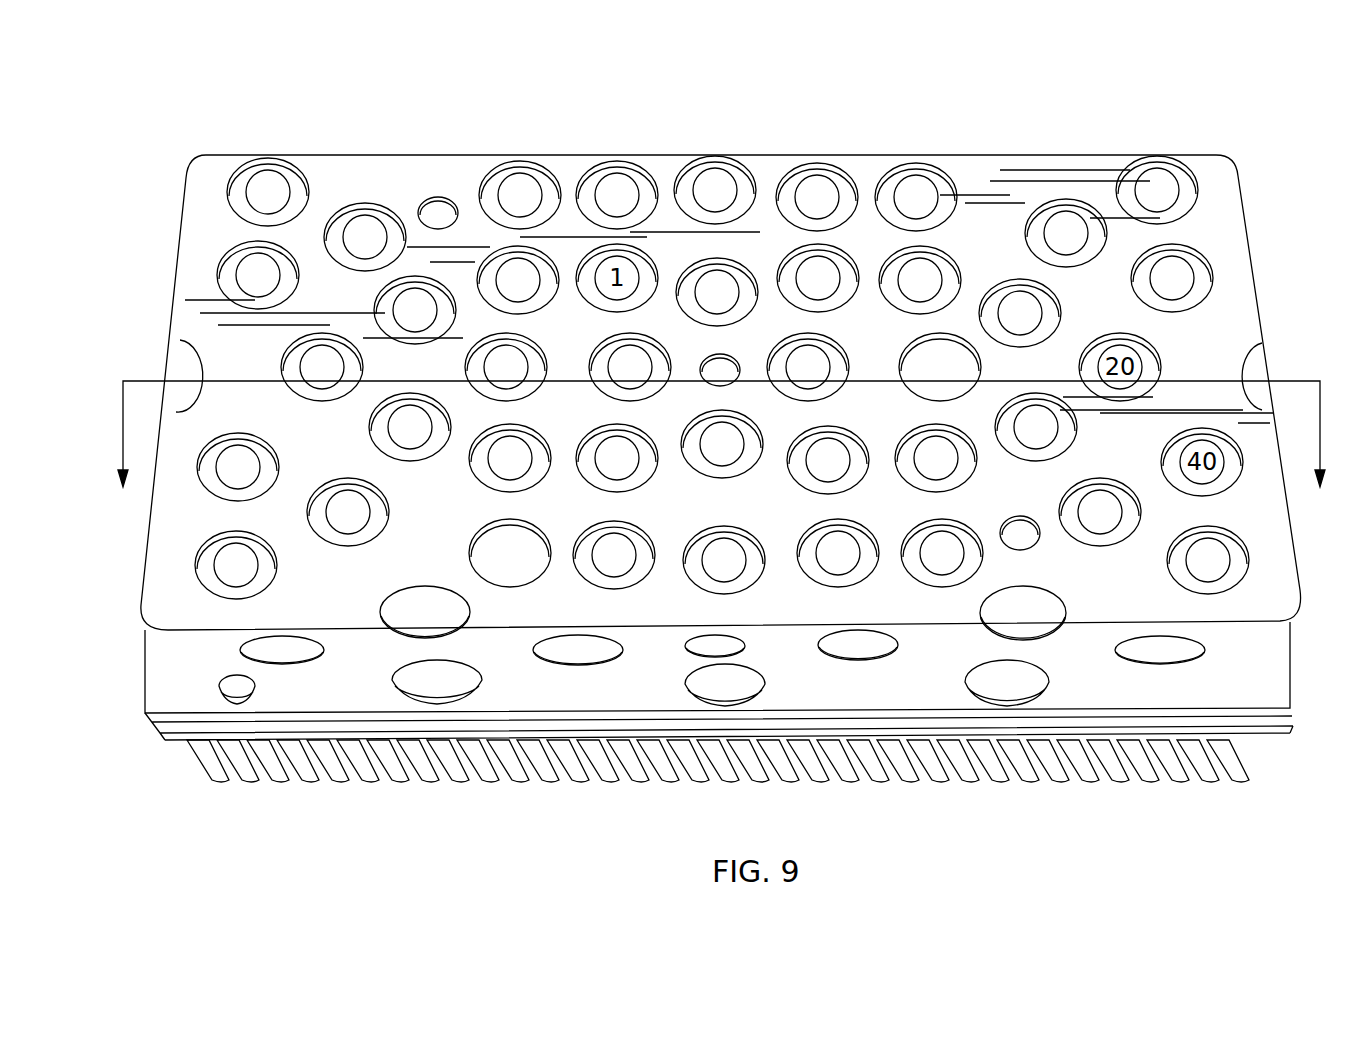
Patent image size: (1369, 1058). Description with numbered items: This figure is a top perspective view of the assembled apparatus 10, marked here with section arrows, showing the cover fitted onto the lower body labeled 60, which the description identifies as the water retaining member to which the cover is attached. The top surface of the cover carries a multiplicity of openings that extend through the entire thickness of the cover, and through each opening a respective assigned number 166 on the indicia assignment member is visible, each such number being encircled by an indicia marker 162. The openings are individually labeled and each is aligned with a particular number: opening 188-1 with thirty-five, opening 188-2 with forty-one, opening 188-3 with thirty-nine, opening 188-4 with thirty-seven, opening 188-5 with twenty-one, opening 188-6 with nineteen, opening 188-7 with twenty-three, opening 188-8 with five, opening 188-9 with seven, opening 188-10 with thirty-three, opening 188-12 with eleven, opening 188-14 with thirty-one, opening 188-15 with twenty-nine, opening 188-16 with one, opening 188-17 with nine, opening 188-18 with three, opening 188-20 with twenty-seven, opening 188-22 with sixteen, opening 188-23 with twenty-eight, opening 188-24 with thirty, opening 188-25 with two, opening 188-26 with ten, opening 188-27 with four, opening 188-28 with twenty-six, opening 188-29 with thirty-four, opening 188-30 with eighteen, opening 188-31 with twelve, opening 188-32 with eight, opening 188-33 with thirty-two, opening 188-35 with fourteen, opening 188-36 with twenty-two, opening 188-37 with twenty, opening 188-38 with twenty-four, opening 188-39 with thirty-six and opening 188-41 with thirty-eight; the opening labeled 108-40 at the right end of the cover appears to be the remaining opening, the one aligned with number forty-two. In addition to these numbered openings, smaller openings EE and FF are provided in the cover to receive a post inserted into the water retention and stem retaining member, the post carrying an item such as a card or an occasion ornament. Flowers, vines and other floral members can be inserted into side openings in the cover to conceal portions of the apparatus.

The connector housing 108-40 is at (1225, 488).
The connector body front face 60 is at (1066, 700).
The apparatus 10 is at (725, 447).
The opening 188-1 is at (246, 176).
The opening 188-2 is at (238, 262).
The opening 188-3 is at (215, 482).
The opening 188-4 is at (205, 582).
The opening 188-5 is at (362, 206).
The opening 188-6 is at (325, 340).
The opening 188-7 is at (347, 548).
The opening 188-8 is at (445, 300).
The opening 188-9 is at (410, 462).
The opening 188-10 is at (523, 175).
The opening 188-12 is at (540, 378).
The opening 188-14 is at (545, 492).
The opening 188-15 is at (752, 278).
The opening 188-16 is at (637, 578).
The opening 188-17 is at (670, 397).
The opening 188-18 is at (687, 483).
The opening 188-20 is at (725, 165).
The opening 188-22 is at (748, 592).
The opening 188-23 is at (546, 278).
The opening 188-24 is at (848, 195).
The opening 188-25 is at (855, 268).
The opening 188-26 is at (853, 383).
The opening 188-27 is at (870, 457).
The opening 188-28 is at (860, 578).
The opening 188-29 is at (950, 190).
The opening 188-30 is at (987, 255).
The opening 188-31 is at (1030, 378).
The opening 188-32 is at (1010, 482).
The opening 188-33 is at (1093, 218).
The opening 188-35 is at (1107, 305).
The opening 188-36 is at (1120, 450).
The opening 188-37 is at (1113, 548).
The opening 188-38 is at (1190, 196).
The opening 188-39 is at (1205, 292).
The opening 188-41 is at (1227, 592).
The indicia marker 162 is at (613, 156).
The indicia 166 is at (620, 183).
The opening EE is at (440, 205).
The opening FF is at (730, 375).